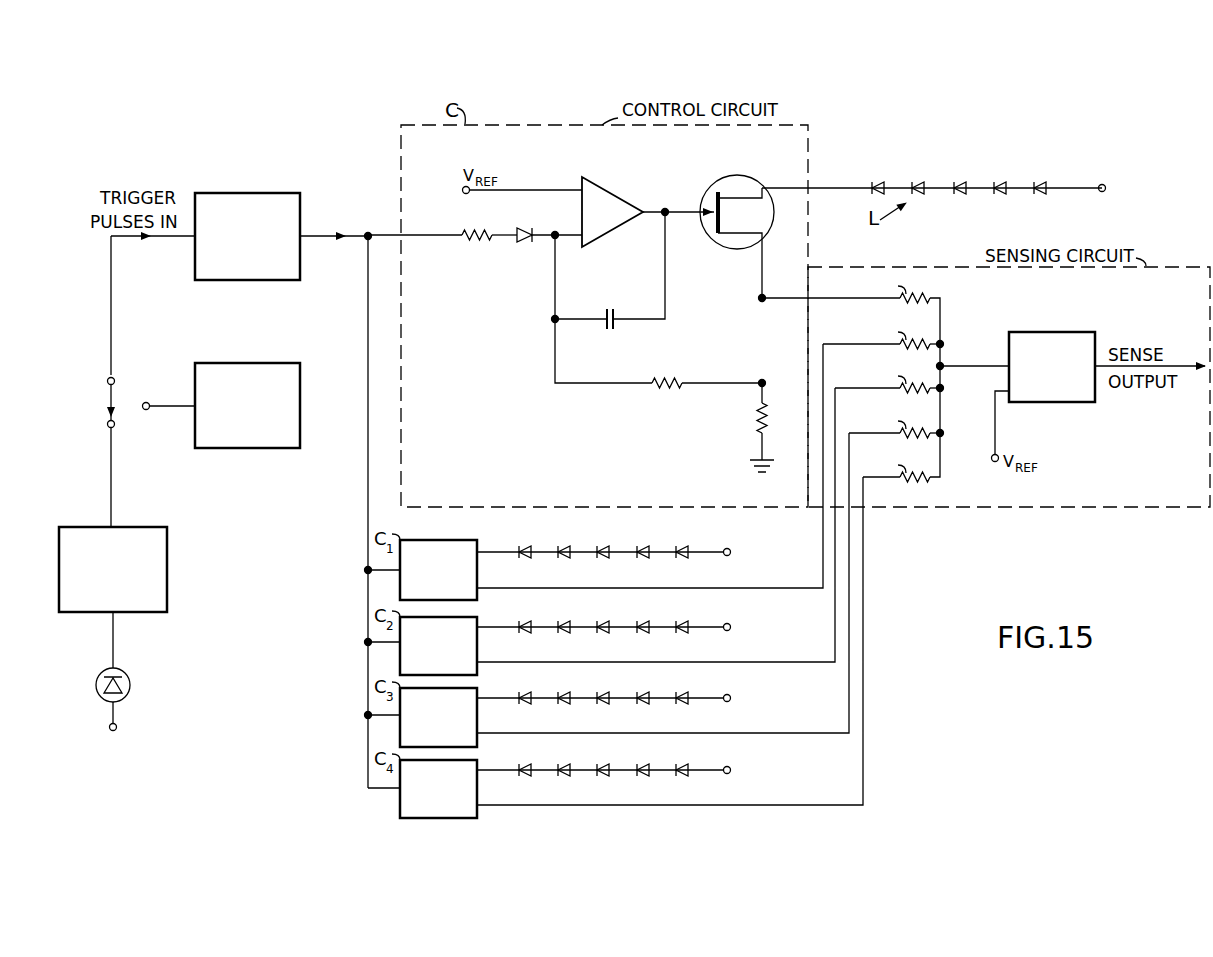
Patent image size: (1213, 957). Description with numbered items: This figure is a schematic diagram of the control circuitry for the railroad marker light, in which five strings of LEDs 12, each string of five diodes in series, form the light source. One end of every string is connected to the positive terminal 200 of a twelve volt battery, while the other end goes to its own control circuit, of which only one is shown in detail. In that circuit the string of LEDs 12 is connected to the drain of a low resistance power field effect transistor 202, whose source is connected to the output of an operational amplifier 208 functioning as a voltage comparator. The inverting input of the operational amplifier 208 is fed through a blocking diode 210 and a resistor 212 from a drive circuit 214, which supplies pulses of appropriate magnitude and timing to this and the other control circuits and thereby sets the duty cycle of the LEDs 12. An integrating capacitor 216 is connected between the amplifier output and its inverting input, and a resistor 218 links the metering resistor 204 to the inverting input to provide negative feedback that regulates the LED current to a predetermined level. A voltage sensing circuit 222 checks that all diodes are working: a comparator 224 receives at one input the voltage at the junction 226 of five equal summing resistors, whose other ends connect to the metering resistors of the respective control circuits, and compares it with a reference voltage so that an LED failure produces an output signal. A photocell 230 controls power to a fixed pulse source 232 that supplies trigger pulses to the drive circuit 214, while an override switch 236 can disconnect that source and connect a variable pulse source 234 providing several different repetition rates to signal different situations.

The LEDs 12 is at (958, 196).
The positive terminal 200 is at (1100, 196).
The power field effect transistor 202 is at (736, 178).
The metering resistor 204 is at (758, 428).
The operational amplifier 208 is at (632, 201).
The blocking diode 210 is at (516, 242).
The resistor 212 is at (486, 243).
The drive circuit 214 is at (254, 193).
The integrating capacitor 216 is at (607, 308).
The resistor 218 is at (678, 382).
The voltage sensing circuit 222 is at (934, 267).
The comparator 224 is at (1056, 332).
The junction 226 is at (947, 360).
The photocell 230 is at (128, 676).
The fixed pulse source 232 is at (126, 527).
The variable pulse source 234 is at (246, 363).
The override switch 236 is at (116, 398).